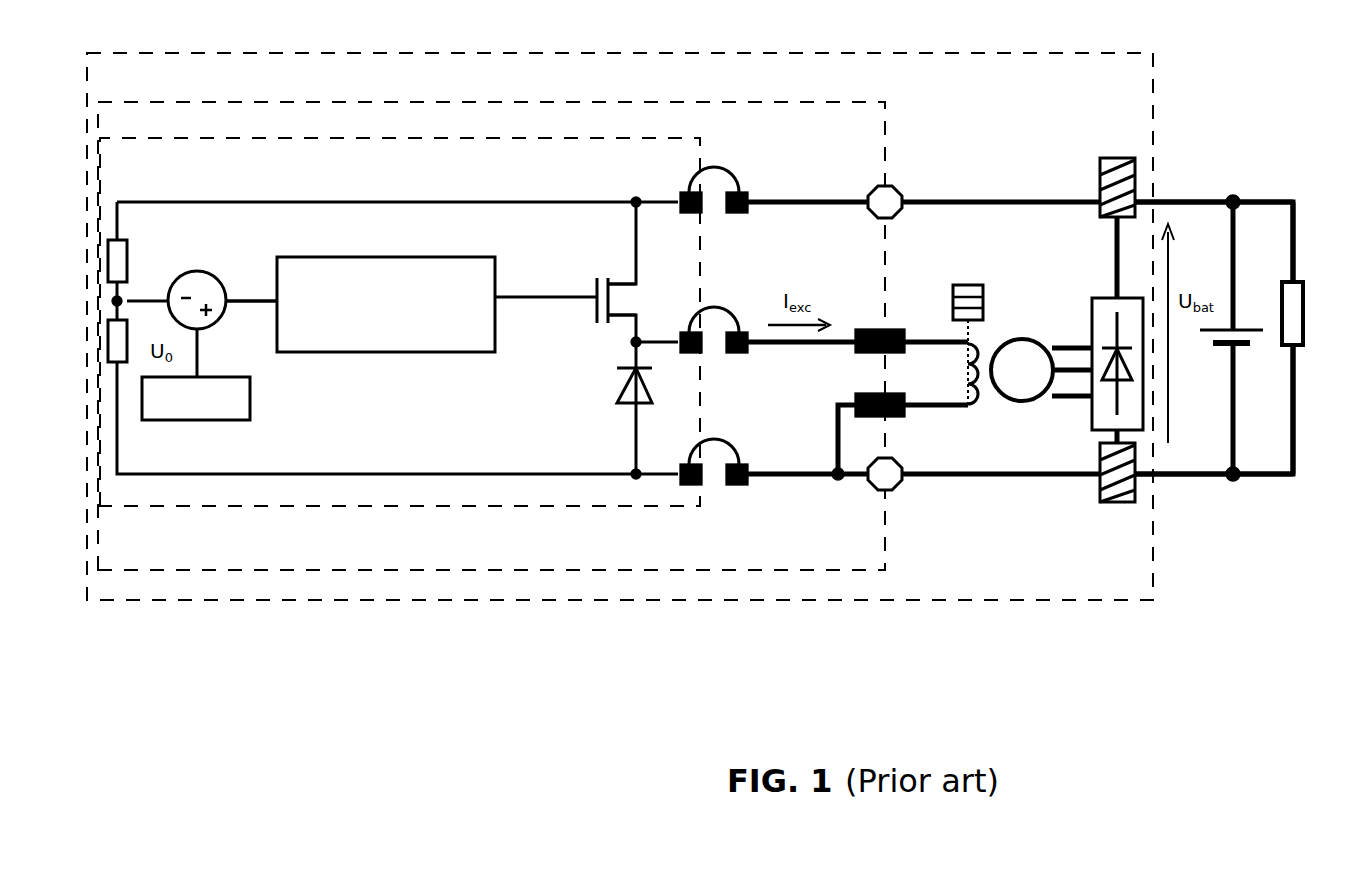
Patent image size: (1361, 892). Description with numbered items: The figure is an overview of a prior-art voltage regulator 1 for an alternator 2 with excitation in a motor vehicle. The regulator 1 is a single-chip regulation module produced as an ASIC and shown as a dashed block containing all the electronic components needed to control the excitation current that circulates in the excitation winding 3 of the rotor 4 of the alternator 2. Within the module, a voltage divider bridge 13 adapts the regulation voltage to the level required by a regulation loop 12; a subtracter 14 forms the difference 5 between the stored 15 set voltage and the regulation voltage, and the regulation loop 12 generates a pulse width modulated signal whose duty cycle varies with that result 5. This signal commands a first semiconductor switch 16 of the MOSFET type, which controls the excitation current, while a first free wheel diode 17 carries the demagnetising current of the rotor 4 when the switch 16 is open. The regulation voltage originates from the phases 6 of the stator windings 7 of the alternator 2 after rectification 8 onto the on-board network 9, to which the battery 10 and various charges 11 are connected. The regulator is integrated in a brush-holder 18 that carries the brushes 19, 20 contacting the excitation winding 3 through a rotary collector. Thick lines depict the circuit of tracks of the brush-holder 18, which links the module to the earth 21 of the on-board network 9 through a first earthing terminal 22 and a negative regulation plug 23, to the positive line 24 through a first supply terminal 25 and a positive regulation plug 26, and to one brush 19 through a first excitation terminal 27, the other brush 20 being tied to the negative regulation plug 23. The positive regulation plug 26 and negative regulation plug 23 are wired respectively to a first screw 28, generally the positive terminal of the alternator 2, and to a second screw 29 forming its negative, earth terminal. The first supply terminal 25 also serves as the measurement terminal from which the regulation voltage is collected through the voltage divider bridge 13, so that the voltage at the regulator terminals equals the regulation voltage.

The voltage regulator 1 is at (500, 512).
The alternator 2 is at (1032, 50).
The excitation winding 3 is at (975, 405).
The rotor 4 is at (958, 285).
The difference 5 is at (262, 303).
The phases 6 is at (1075, 400).
The stator windings 7 is at (1015, 355).
The rectification 8 is at (1098, 310).
The on-board network 9 is at (1262, 200).
The battery 10 is at (1243, 346).
The charges 11 is at (1304, 310).
The regulation loop 12 is at (374, 353).
The voltage divider bridge 13 is at (120, 300).
The subtracter 14 is at (207, 283).
The stored set voltage 15 is at (207, 418).
The first semiconductor switch 16 is at (607, 280).
The first free wheel diode 17 is at (630, 405).
The brush-holder 18 is at (890, 110).
The brush 19 is at (890, 330).
The brush 20 is at (895, 418).
The earth 21 is at (1180, 478).
The first earthing terminal 22 is at (690, 464).
The negative regulation plug 23 is at (885, 480).
The positive line 24 is at (1188, 200).
The first supply terminal 25 is at (690, 192).
The positive regulation plug 26 is at (893, 198).
The first excitation terminal 27 is at (690, 332).
The first screw 28 is at (1100, 185).
The second screw 29 is at (1105, 487).